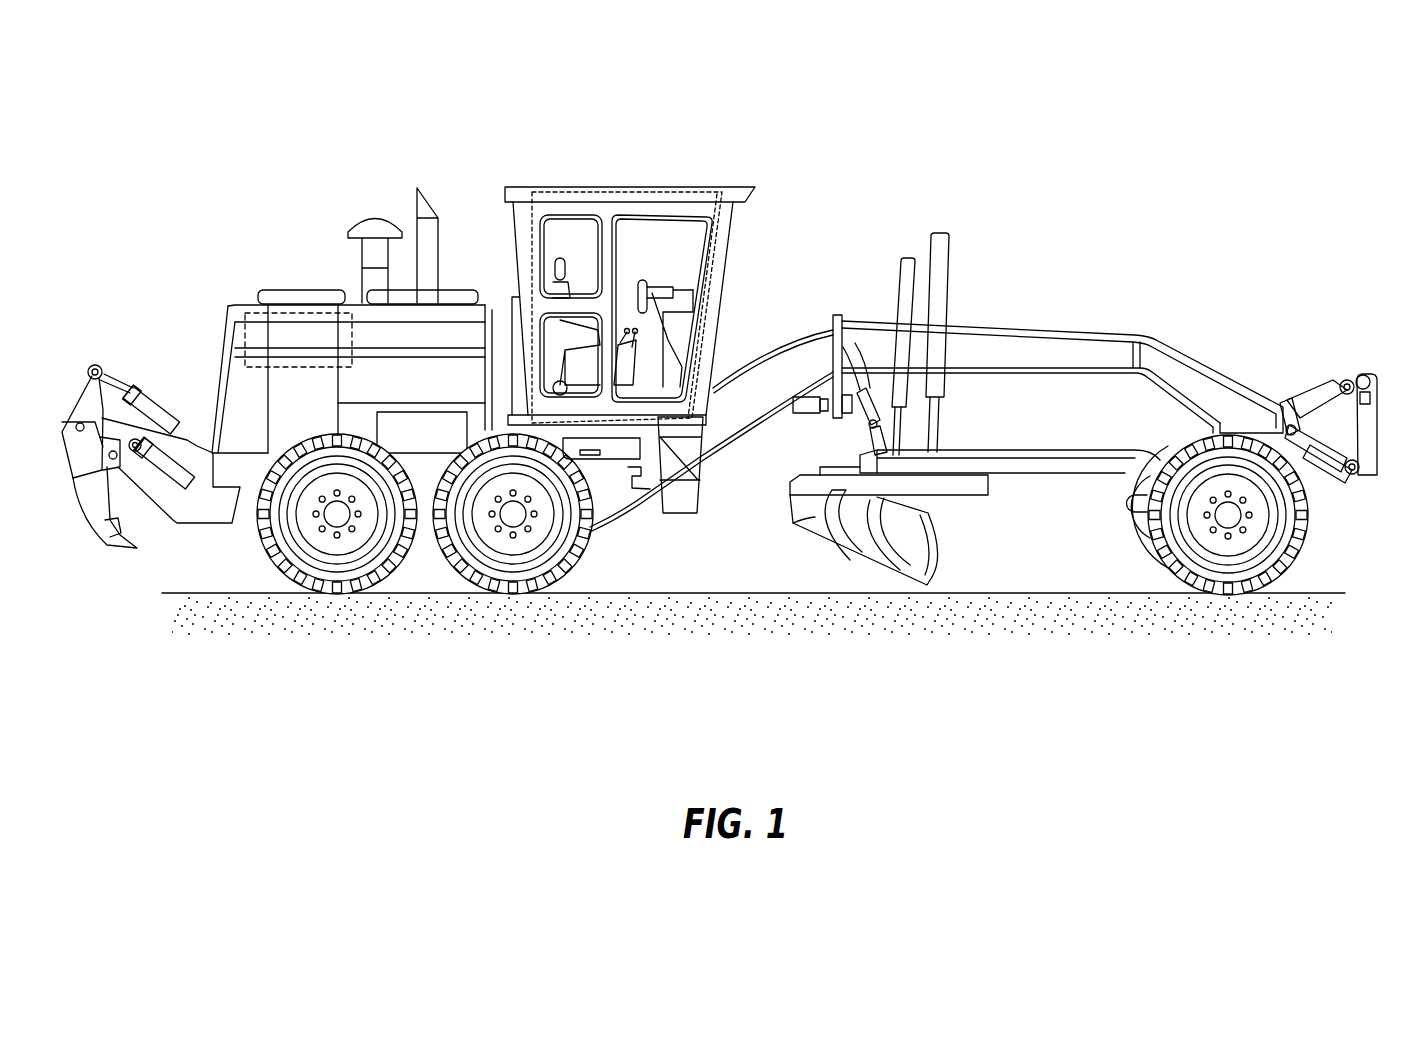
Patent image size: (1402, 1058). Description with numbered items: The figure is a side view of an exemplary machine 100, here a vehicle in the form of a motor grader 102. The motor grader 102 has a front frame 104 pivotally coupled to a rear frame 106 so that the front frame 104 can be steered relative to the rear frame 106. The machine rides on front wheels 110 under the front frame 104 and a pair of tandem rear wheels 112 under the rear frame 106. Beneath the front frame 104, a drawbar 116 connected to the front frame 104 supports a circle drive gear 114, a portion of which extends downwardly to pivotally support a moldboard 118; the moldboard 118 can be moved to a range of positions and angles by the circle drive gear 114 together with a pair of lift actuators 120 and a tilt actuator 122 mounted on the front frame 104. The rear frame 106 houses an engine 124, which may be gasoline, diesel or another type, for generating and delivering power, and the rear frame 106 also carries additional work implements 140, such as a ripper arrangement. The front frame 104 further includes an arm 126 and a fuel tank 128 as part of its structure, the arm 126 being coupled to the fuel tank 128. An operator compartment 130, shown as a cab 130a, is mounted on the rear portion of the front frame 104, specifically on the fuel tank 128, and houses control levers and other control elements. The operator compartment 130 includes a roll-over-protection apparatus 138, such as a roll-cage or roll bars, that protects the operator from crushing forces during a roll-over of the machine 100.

The machine 100 is at (699, 395).
The motor grader 102 is at (699, 395).
The front frame 104 is at (1063, 328).
The rear frame 106 is at (425, 468).
The front wheels 110 is at (1308, 552).
The tandem rear wheels 112 is at (290, 567).
The circle drive gear 114 is at (950, 487).
The drawbar 116 is at (1048, 450).
The moldboard 118 is at (807, 513).
The lift actuators 120 is at (933, 422).
The tilt actuator 122 is at (866, 431).
The engine 124 is at (299, 332).
The arm 126 is at (803, 354).
The fuel tank 128 is at (640, 498).
The operator compartment 130 is at (686, 300).
The cab 130a is at (686, 300).
The roll-over-protection apparatus 138 is at (535, 212).
The work implements 140 is at (72, 457).